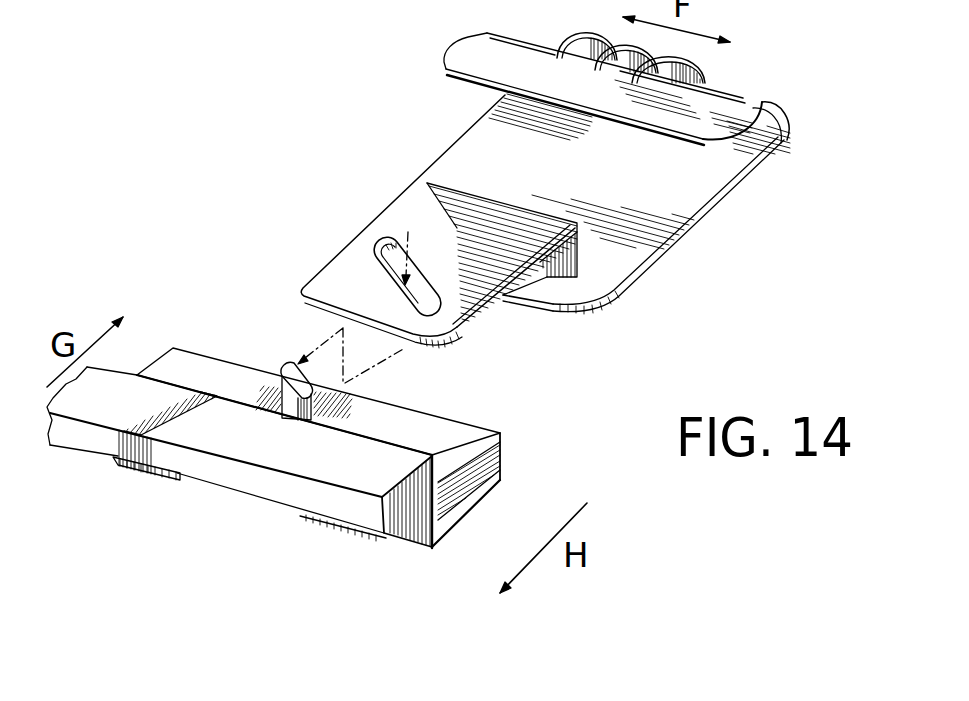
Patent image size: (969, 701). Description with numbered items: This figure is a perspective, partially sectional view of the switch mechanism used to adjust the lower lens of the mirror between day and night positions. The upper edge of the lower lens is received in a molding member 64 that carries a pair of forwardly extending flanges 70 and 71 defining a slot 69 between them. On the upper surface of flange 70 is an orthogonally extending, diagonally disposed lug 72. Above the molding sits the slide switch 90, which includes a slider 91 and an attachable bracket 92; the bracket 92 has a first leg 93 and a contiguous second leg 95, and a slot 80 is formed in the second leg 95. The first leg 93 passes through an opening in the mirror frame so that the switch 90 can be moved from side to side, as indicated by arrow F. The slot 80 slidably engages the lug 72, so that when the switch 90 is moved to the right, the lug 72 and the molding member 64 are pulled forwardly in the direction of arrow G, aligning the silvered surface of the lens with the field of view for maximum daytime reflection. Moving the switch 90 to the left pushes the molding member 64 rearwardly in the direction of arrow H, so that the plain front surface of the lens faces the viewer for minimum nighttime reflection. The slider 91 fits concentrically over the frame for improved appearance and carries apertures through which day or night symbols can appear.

The molding member 64 is at (273, 490).
The slot 69 is at (487, 467).
The flange 70 is at (468, 430).
The flange 71 is at (476, 497).
The lug 72 is at (285, 360).
The slot 80 is at (412, 286).
The slide switch 90 is at (724, 218).
The slider 91 is at (784, 112).
The bracket 92 is at (382, 243).
The first leg 93 is at (628, 294).
The second leg 95 is at (467, 297).